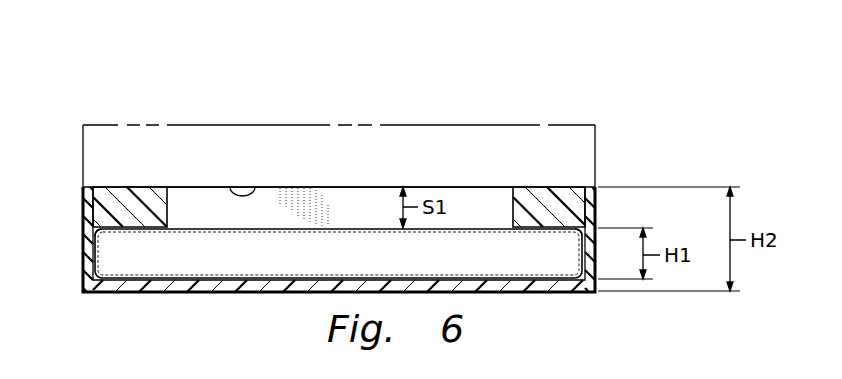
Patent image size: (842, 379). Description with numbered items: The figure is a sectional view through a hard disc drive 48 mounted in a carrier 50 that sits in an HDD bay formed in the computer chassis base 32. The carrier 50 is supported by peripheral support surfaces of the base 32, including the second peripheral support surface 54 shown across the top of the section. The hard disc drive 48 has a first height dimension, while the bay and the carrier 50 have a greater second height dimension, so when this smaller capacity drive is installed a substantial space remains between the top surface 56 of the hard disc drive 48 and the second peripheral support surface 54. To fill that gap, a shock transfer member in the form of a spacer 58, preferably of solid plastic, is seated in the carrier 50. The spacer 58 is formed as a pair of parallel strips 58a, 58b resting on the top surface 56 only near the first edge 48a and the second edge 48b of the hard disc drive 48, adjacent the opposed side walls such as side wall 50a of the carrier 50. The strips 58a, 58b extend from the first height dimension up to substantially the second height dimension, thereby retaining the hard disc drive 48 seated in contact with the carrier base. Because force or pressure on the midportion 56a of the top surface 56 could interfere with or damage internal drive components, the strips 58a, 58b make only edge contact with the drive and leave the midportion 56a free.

The computer chassis base 32 is at (372, 125).
The carrier 50 is at (83, 210).
The side wall of carrier 50a is at (168, 285).
The spacer 58 is at (175, 207).
The first spacer strip 58a is at (130, 187).
The second spacer strip 58b is at (548, 187).
The second peripheral support surface 54 is at (250, 187).
The top surface of HDD 56 is at (470, 228).
The midportion of top surface 56a is at (352, 228).
The hard disc drive 48 is at (508, 264).
The first edge of HDD 48a is at (102, 262).
The second edge of HDD 48b is at (578, 255).